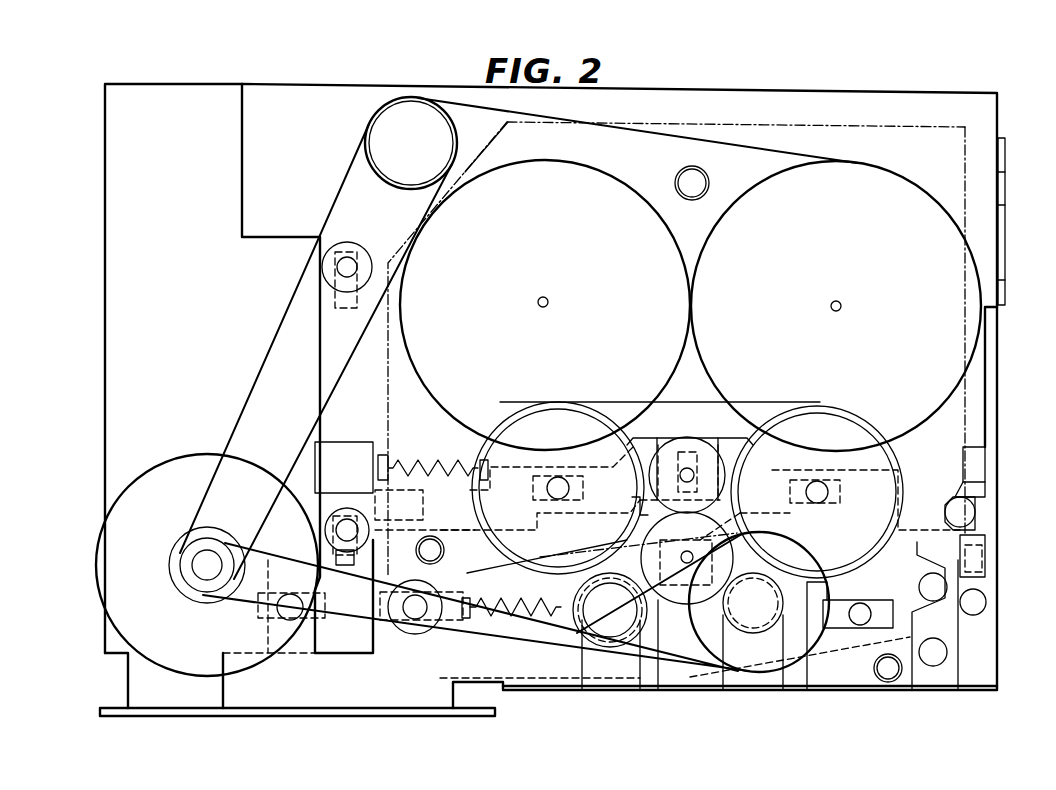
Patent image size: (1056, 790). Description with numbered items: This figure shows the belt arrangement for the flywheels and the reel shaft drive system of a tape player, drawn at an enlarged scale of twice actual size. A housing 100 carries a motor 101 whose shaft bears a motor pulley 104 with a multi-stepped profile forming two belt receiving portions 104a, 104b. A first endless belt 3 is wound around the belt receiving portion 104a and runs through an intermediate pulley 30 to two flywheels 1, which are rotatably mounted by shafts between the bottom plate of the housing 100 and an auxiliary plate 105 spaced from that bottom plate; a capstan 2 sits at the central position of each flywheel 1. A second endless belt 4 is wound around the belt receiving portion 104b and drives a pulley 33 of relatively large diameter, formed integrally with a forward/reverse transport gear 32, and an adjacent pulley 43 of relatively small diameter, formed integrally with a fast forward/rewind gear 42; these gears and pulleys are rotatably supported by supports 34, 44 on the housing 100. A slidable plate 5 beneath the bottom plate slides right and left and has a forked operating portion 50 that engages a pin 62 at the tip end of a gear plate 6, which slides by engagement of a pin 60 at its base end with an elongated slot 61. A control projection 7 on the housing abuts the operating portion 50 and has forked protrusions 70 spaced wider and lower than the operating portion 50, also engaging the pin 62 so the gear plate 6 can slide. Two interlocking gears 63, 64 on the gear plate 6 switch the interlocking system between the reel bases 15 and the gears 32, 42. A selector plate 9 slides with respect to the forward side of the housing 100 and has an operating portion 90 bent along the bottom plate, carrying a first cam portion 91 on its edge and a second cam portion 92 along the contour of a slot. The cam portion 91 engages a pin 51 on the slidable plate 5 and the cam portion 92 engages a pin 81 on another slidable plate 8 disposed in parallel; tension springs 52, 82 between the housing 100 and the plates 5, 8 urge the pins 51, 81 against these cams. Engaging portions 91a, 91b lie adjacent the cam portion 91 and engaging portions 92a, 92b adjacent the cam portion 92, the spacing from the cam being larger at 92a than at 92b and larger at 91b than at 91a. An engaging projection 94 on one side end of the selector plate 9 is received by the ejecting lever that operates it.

The flywheel 1 is at (577, 170).
The capstan 2 is at (549, 302).
The first endless belt 3 is at (295, 308).
The second endless belt 4 is at (476, 607).
The slidable plate 5 is at (837, 660).
The gear plate 6 is at (645, 500).
The control projection 7 is at (680, 650).
The slidable plate 8 is at (740, 445).
The selector plate 9 is at (1005, 254).
The reel base 15 is at (520, 414).
The intermediate pulley 30 is at (406, 100).
The forward/reverse transport gear 32 is at (754, 640).
The pulley 33 is at (736, 662).
The support 34 is at (789, 650).
The fast forward/rewind gear 42 is at (608, 640).
The pulley 43 is at (593, 623).
The support 44 is at (645, 647).
The operating portion 50 is at (740, 508).
The pin 51 is at (940, 590).
The tension spring 52 is at (493, 610).
The pin 60 is at (690, 470).
The elongated slot 61 is at (680, 439).
The pin 62 is at (694, 590).
The interlocking gear 63 is at (683, 445).
The interlocking gear 64 is at (648, 520).
The forked protrusion 70 is at (648, 563).
The pin 81 is at (968, 512).
The tension spring 82 is at (432, 468).
The operating portion 90 is at (992, 408).
The first cam portion 91 is at (960, 620).
The engaging portion 91a is at (975, 555).
The engaging portion 91b is at (962, 642).
The second cam portion 92 is at (975, 490).
The engaging portion 92a is at (970, 466).
The engaging portion 92b is at (978, 534).
The engaging projection 94 is at (1006, 186).
The housing 100 is at (116, 306).
The motor 101 is at (102, 553).
The motor pulley 104 is at (240, 622).
The belt receiving portion 104a is at (192, 572).
The belt receiving portion 104b is at (212, 579).
The auxiliary plate 105 is at (775, 122).